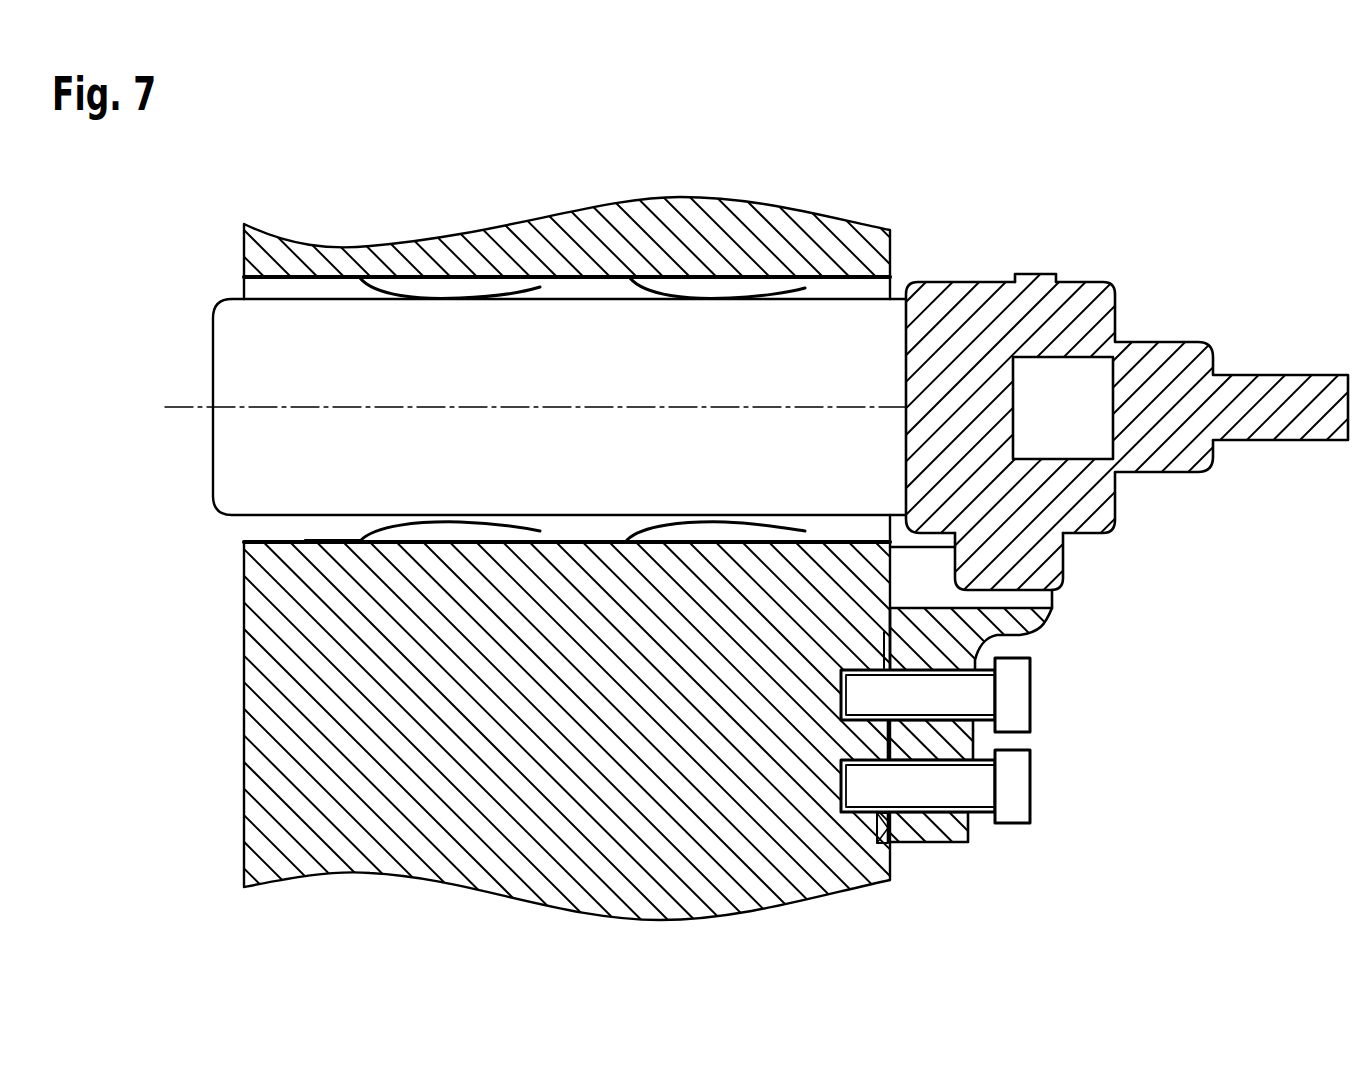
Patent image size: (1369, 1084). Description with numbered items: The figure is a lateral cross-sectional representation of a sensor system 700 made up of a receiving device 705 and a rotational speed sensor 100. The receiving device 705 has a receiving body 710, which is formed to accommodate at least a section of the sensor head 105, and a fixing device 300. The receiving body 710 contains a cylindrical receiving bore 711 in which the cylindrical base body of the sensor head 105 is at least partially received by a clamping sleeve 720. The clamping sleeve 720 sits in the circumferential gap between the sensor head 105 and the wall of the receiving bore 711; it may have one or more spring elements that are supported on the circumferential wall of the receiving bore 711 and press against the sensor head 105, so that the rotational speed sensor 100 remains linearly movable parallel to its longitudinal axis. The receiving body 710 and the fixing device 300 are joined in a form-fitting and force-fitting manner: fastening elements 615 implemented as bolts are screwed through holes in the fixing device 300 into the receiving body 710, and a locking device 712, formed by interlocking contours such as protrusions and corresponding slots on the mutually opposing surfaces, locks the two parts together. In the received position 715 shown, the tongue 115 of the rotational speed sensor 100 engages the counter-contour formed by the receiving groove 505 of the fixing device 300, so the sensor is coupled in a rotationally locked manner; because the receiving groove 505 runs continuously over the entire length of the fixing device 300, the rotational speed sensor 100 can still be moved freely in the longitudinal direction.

The sensor system 700 is at (501, 534).
The receiving device 705 is at (559, 212).
The receiving body 710 is at (541, 243).
The receiving bore 711 is at (241, 288).
The sensor head 105 is at (222, 366).
The clamping sleeve 720 is at (641, 292).
The rotational speed sensor 100 is at (1127, 348).
The received position 715 is at (1068, 192).
The tongue 115 is at (1046, 555).
The receiving groove 505 is at (1054, 598).
The fastening elements 615 is at (1016, 691).
The fixing device 300 is at (957, 833).
The locking device 712 is at (895, 851).